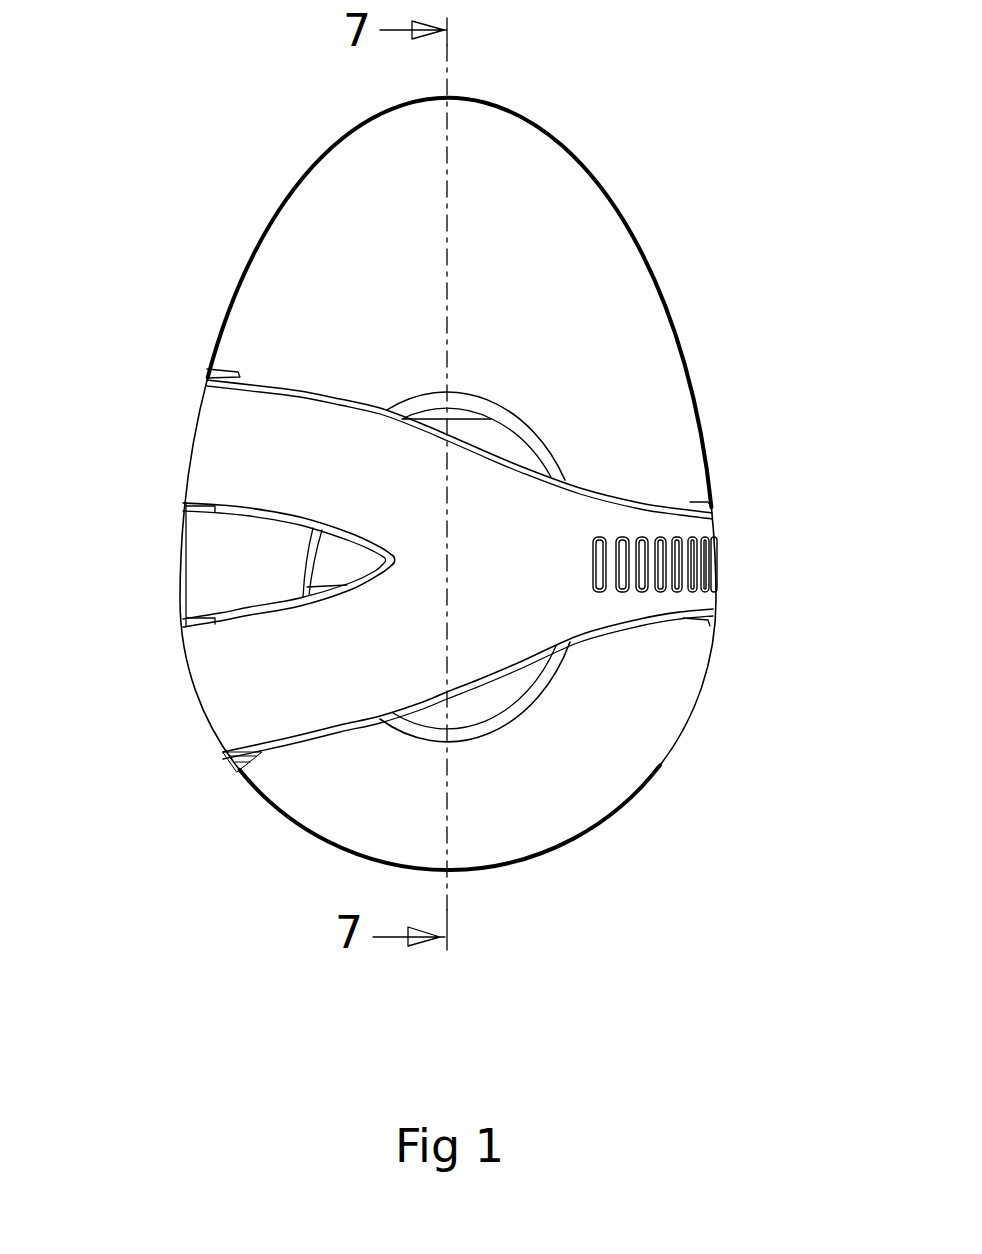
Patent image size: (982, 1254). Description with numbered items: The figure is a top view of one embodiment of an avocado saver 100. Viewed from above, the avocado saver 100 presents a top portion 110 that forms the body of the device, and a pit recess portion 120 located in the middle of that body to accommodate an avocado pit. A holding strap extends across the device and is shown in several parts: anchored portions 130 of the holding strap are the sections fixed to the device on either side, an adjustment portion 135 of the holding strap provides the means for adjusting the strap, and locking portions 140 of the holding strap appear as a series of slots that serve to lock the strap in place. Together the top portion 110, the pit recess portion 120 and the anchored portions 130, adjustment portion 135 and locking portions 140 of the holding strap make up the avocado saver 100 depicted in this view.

The avocado saver 100 is at (672, 162).
The top portion 110 is at (648, 338).
The pit recess portion 120 is at (508, 687).
The anchored portions of the holding strap 130 is at (243, 477).
The adjustment portion of the holding strap 135 is at (695, 602).
The locking portions of the holding strap 140 is at (600, 592).